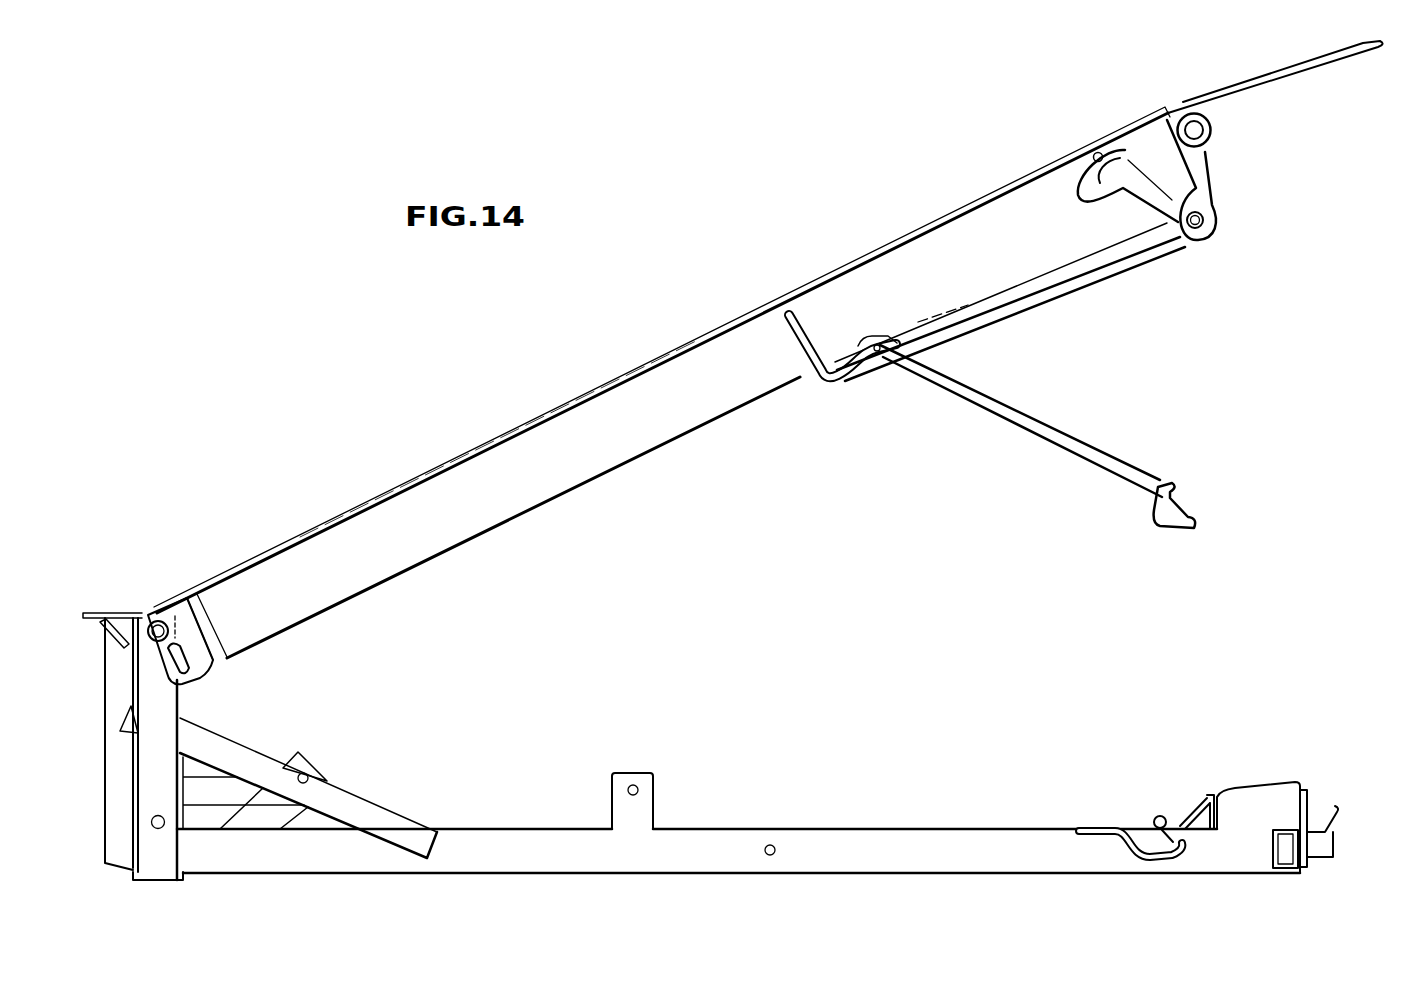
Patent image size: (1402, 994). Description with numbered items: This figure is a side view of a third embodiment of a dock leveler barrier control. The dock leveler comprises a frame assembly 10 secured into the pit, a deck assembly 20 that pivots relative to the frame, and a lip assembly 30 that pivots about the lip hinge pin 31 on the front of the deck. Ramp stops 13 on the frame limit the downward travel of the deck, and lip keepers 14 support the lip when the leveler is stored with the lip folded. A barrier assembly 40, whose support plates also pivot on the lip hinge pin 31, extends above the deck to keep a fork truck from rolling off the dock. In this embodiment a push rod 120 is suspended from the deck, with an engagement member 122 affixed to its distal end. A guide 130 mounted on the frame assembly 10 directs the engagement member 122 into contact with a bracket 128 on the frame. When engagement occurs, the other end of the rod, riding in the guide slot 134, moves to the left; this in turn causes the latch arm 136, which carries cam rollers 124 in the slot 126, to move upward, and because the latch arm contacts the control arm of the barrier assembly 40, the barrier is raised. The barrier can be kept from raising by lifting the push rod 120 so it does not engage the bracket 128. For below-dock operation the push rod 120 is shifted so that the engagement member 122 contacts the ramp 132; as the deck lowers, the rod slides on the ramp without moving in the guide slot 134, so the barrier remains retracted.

The frame assembly 10 is at (866, 828).
The ramp stops 13 is at (1282, 797).
The lip keepers 14 is at (1336, 826).
The deck assembly 20 is at (455, 458).
The lip assembly 30 is at (1262, 98).
The lip hinge pin 31 is at (1214, 138).
The barrier assembly 40 is at (1160, 109).
The push rod 120 is at (1070, 452).
The engagement member 122 is at (1178, 530).
The cam rollers 124 is at (1208, 232).
The slot 126 is at (1088, 178).
The bracket 128 is at (1177, 820).
The guide 130 is at (1148, 862).
The ramp 132 is at (1194, 820).
The guide slot 134 is at (812, 342).
The latch arm 136 is at (990, 297).